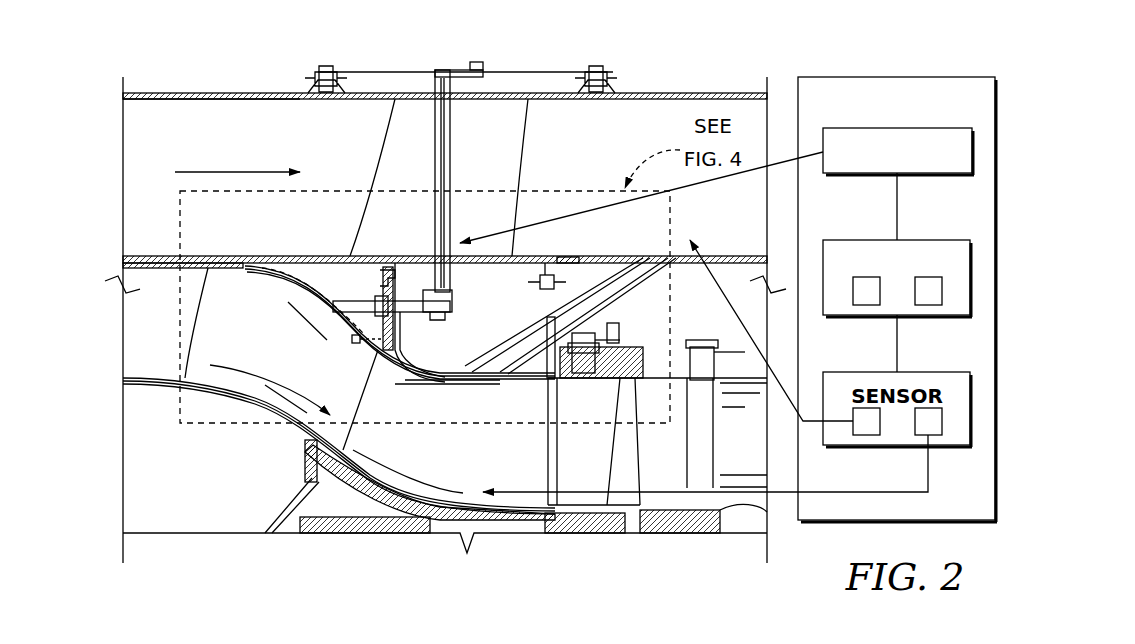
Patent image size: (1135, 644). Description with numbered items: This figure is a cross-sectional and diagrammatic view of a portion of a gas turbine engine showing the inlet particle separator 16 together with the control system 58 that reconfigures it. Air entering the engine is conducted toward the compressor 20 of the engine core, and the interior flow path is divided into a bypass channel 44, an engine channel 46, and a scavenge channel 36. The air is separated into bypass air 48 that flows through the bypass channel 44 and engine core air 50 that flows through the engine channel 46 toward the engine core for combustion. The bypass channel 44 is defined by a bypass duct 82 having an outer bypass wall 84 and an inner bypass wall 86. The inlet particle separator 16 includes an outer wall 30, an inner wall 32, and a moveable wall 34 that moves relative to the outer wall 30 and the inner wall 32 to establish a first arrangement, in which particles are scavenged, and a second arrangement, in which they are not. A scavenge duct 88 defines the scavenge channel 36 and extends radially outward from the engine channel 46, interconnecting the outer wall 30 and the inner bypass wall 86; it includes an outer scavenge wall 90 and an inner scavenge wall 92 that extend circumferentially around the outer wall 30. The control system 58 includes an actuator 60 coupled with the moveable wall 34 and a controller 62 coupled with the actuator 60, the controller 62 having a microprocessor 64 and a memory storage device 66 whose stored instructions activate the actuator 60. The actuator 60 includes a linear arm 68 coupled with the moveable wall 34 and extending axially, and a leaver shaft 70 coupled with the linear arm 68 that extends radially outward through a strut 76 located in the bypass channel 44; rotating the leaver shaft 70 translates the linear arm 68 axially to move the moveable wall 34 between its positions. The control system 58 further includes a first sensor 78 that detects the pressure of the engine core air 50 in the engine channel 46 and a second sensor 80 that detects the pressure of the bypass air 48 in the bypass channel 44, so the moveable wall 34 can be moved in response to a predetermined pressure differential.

The inlet particle separator 16 is at (175, 355).
The compressor 20 is at (543, 498).
The outer wall 30 is at (443, 380).
The inner wall 32 is at (427, 497).
The moveable wall 34 is at (297, 295).
The scavenge channel 36 is at (645, 248).
The bypass channel 44 is at (268, 130).
The engine channel 46 is at (287, 360).
The bypass air 48 is at (222, 172).
The engine core air 50 is at (245, 372).
The control system 58 is at (843, 77).
The actuator 60 is at (860, 173).
The controller 62 is at (907, 240).
The microprocessor 64 is at (866, 305).
The memory storage device 66 is at (929, 305).
The linear arm 68 is at (418, 292).
The leaver shaft 70 is at (452, 155).
The strut 76 is at (381, 160).
The first sensor 78 is at (866, 435).
The second sensor 80 is at (942, 435).
The bypass duct 82 is at (180, 90).
The outer bypass wall 84 is at (186, 104).
The inner bypass wall 86 is at (160, 253).
The scavenge duct 88 is at (594, 270).
The outer scavenge wall 90 is at (480, 330).
The inner scavenge wall 92 is at (592, 303).